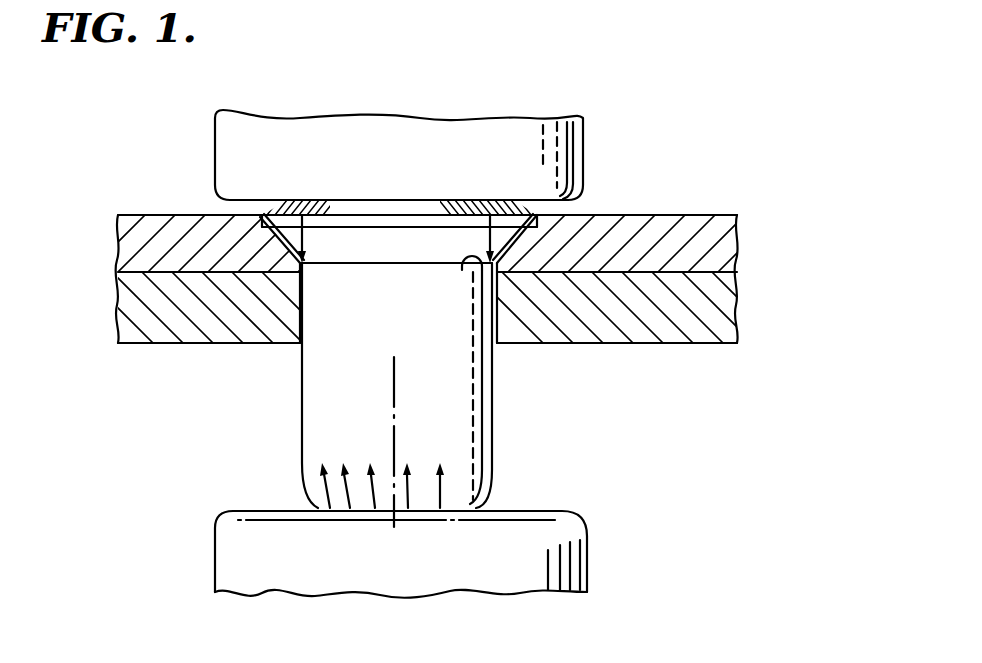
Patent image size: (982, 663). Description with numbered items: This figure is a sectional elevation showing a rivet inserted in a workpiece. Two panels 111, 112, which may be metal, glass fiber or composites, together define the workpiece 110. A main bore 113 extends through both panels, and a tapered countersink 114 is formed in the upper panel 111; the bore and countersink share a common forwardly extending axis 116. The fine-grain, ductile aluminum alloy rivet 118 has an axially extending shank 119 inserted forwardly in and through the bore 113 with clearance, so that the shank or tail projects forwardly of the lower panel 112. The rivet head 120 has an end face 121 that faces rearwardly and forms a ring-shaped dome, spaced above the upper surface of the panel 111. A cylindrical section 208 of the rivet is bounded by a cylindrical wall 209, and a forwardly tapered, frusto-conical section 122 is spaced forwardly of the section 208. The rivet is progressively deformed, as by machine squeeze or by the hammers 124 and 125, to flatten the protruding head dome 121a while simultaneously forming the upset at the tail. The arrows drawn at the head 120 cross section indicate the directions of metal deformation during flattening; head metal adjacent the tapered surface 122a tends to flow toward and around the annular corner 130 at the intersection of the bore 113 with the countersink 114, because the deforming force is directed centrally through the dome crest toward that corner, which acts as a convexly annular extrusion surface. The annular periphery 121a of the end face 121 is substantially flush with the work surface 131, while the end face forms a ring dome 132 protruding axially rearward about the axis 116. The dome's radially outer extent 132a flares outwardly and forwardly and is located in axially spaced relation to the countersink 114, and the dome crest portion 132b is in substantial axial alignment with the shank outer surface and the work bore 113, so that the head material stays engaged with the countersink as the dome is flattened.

The workpiece 110 is at (124, 355).
The panel 111 is at (726, 240).
The panel 112 is at (726, 303).
The main bore 113 is at (290, 300).
The tapered countersink 114 is at (280, 240).
The axis 116 is at (394, 385).
The rivet 118 is at (290, 455).
The shank 119 is at (447, 404).
The rivet head 120 is at (538, 195).
The end face 121 is at (460, 200).
The annular periphery of the end face 121a is at (495, 200).
The frusto-conical section 122 is at (348, 252).
The tapered surface 122a is at (533, 268).
The hammer 124 is at (573, 134).
The hammer 125 is at (413, 577).
The annular corner 130 is at (462, 260).
The work surface 131 is at (685, 213).
The ring dome 132 is at (310, 200).
The dome radially outer extent 132a is at (272, 200).
The dome crest portion 132b is at (297, 190).
The cylindrical section 208 is at (372, 223).
The cylindrical wall 209 is at (260, 220).